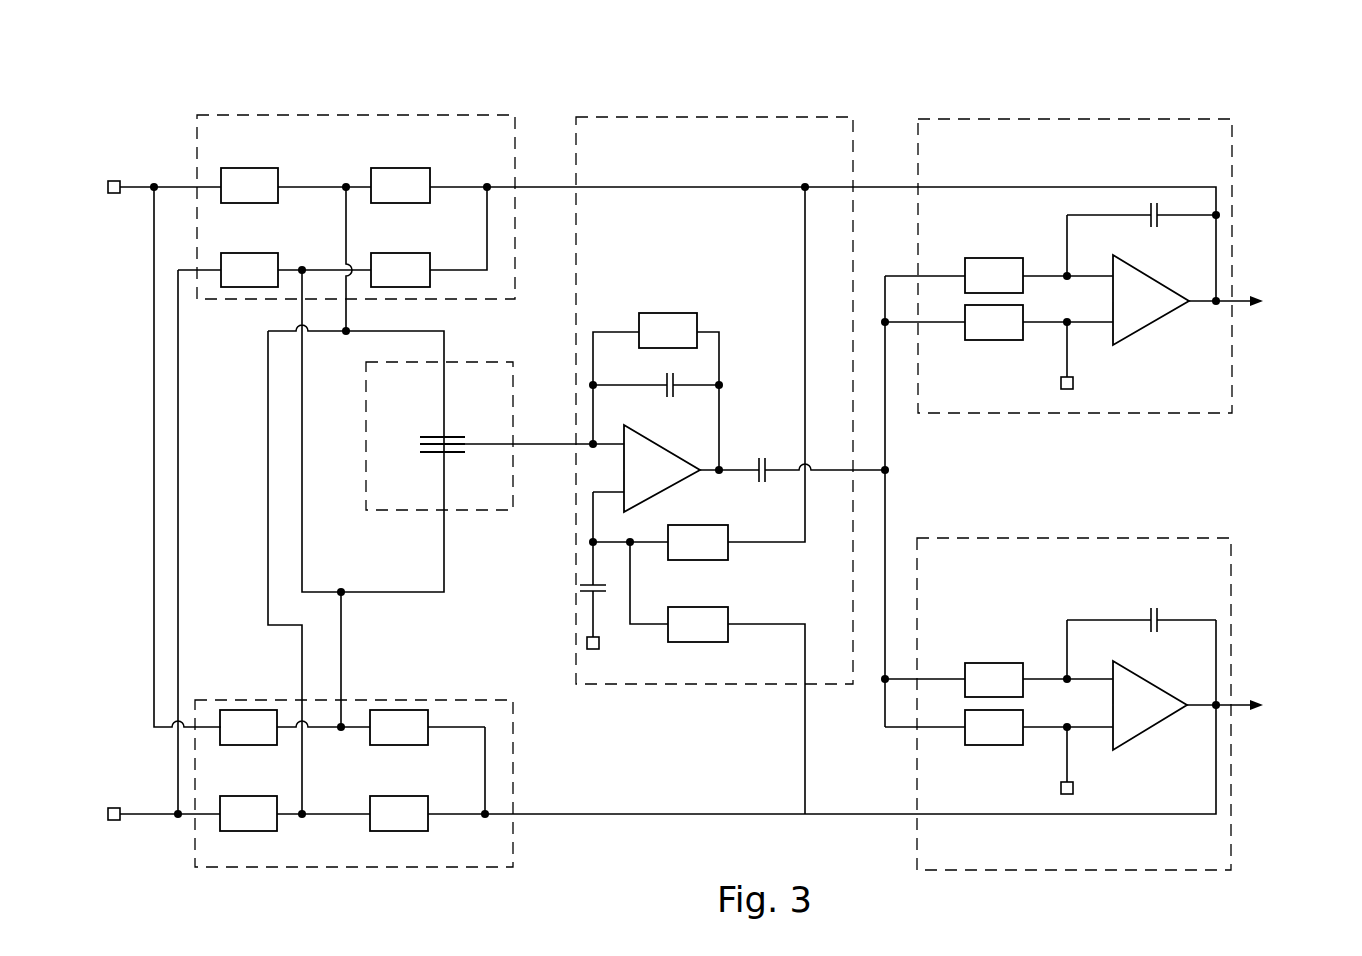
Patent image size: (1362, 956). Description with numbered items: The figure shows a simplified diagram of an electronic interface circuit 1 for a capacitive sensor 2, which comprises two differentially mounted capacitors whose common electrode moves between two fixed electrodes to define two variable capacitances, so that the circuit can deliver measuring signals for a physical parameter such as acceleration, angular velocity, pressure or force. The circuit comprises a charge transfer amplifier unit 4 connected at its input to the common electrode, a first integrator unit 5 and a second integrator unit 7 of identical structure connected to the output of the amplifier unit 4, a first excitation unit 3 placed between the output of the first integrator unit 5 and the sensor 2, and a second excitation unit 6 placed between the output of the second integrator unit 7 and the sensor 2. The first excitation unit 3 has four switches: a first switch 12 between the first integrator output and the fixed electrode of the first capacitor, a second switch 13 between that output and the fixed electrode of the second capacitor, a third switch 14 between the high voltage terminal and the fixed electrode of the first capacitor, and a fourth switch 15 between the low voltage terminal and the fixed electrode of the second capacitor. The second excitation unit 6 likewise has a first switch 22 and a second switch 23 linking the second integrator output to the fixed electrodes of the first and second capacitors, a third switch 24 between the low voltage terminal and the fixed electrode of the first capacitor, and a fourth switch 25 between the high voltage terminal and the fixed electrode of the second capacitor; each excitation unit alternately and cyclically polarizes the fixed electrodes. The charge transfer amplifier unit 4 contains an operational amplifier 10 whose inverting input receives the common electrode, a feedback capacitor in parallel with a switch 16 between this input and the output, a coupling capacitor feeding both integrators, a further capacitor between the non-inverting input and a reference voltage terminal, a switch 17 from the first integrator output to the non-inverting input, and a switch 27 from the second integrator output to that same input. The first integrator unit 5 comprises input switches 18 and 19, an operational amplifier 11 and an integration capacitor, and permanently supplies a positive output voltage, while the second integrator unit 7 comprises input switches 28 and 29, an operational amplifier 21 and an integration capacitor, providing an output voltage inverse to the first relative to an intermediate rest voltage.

The electronic interface circuit 1 is at (1270, 185).
The capacitive sensor 2 is at (375, 525).
The first excitation unit 3 is at (495, 107).
The charge transfer amplifier unit 4 is at (807, 108).
The first integrator unit 5 is at (1172, 110).
The second excitation unit 6 is at (515, 853).
The second integrator unit 7 is at (1235, 858).
The operational amplifier 10 is at (652, 490).
The operational amplifier 11 is at (1165, 307).
The first switch 12 is at (422, 172).
The second switch 13 is at (422, 258).
The third switch 14 is at (221, 178).
The fourth switch 15 is at (255, 287).
The switch 16 is at (690, 320).
The switch 17 is at (702, 562).
The input switch 18 is at (997, 340).
The input switch 19 is at (992, 262).
The operational amplifier 21 is at (1163, 712).
The first switch 22 is at (420, 828).
The second switch 23 is at (420, 745).
The third switch 24 is at (225, 823).
The fourth switch 25 is at (252, 712).
The switch 27 is at (702, 643).
The input switch 28 is at (997, 745).
The input switch 29 is at (992, 665).